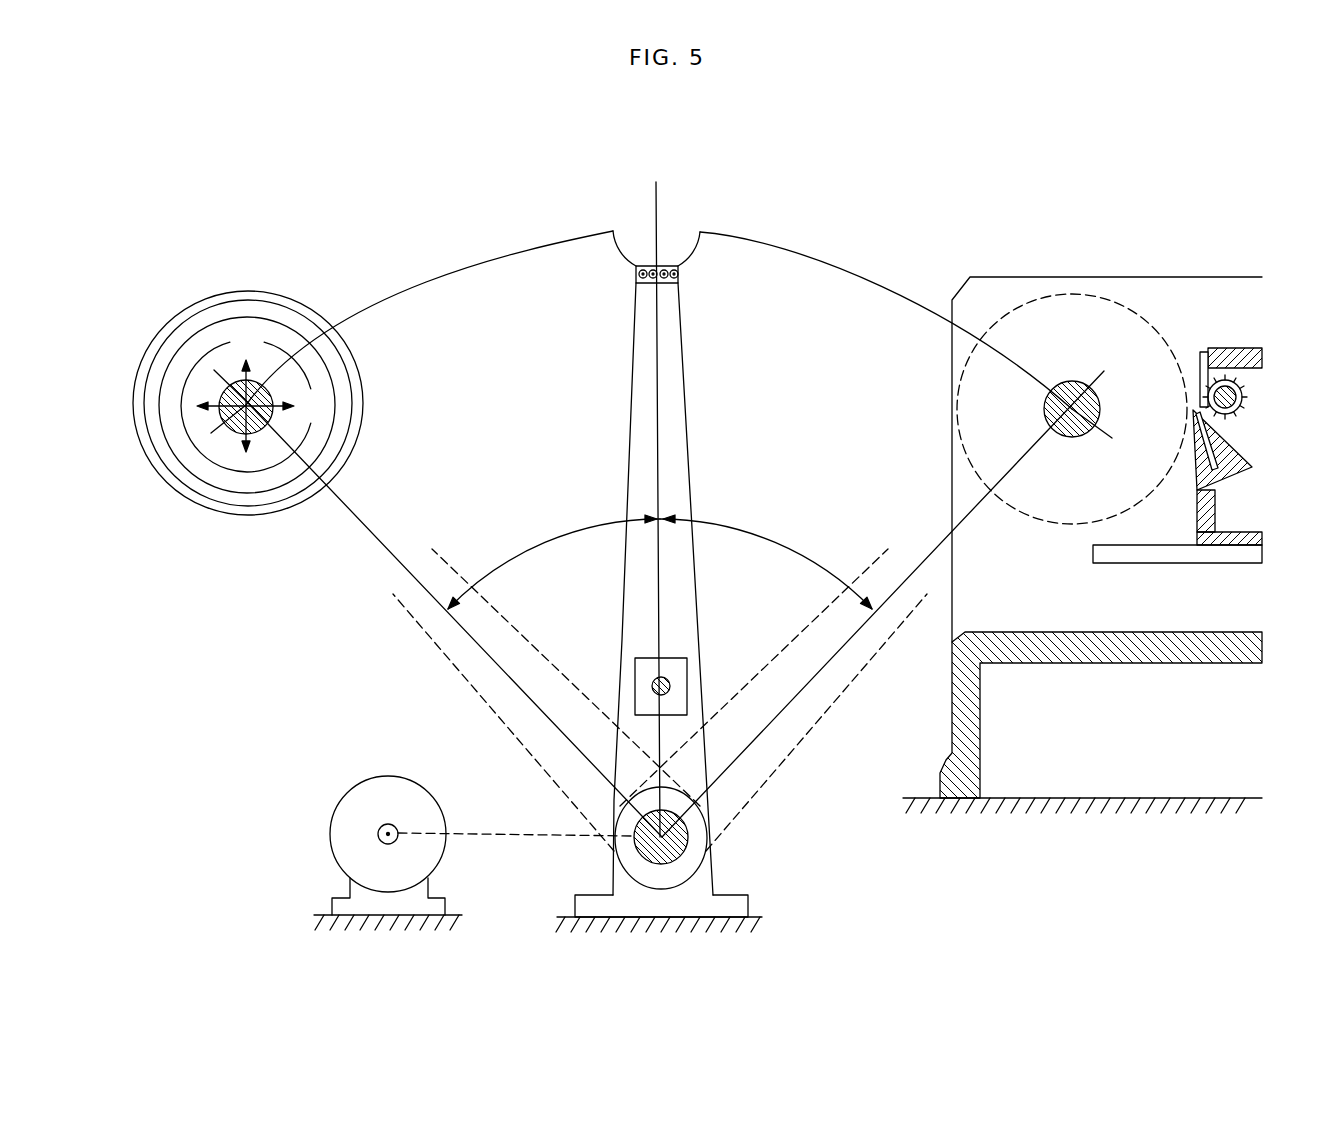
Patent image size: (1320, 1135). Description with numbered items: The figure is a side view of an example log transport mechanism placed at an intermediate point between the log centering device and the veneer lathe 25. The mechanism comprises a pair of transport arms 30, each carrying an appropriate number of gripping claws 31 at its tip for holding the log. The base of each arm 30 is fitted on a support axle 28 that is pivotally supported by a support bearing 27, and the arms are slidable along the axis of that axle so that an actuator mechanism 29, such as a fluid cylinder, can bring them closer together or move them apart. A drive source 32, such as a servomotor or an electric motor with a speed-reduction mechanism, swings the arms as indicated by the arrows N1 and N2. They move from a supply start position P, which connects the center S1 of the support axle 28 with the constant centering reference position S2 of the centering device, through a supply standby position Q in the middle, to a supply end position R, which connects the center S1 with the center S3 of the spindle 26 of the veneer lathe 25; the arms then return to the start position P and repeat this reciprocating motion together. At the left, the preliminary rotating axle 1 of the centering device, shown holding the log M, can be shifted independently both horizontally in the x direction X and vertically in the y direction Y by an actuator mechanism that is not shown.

The preliminary rotating axle 1 is at (257, 432).
The veneer lathe 25 is at (1197, 292).
The spindle 26 is at (1086, 395).
The support bearing 27 is at (742, 908).
The support axle 28 is at (620, 848).
The actuator mechanism 29 is at (688, 678).
The transport arm 30 is at (645, 327).
The gripping claw 31 is at (624, 244).
The drive source 32 is at (388, 795).
The roll medium M is at (235, 505).
The center of the support axle S1 is at (690, 832).
The centering reference position S2 is at (240, 382).
The center of the spindle S3 is at (1072, 395).
The supply start position P is at (388, 543).
The supply standby position Q is at (663, 357).
The supply end position R is at (930, 545).
The arrow N1 is at (563, 535).
The arrow N2 is at (777, 540).
The x direction X is at (305, 409).
The y direction Y is at (242, 342).